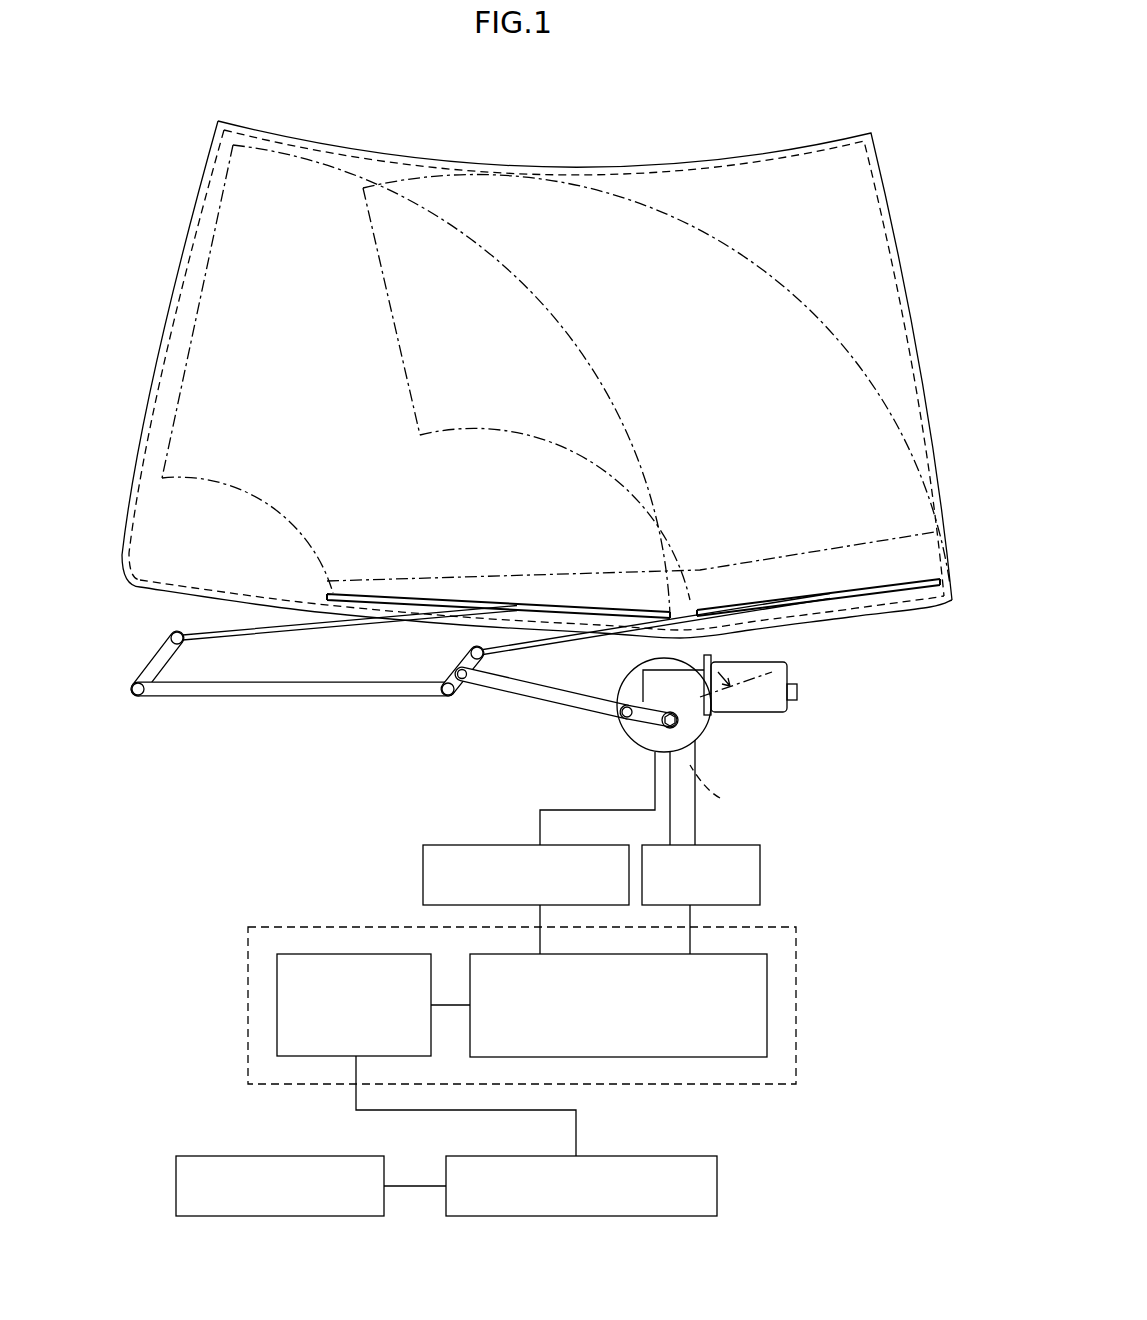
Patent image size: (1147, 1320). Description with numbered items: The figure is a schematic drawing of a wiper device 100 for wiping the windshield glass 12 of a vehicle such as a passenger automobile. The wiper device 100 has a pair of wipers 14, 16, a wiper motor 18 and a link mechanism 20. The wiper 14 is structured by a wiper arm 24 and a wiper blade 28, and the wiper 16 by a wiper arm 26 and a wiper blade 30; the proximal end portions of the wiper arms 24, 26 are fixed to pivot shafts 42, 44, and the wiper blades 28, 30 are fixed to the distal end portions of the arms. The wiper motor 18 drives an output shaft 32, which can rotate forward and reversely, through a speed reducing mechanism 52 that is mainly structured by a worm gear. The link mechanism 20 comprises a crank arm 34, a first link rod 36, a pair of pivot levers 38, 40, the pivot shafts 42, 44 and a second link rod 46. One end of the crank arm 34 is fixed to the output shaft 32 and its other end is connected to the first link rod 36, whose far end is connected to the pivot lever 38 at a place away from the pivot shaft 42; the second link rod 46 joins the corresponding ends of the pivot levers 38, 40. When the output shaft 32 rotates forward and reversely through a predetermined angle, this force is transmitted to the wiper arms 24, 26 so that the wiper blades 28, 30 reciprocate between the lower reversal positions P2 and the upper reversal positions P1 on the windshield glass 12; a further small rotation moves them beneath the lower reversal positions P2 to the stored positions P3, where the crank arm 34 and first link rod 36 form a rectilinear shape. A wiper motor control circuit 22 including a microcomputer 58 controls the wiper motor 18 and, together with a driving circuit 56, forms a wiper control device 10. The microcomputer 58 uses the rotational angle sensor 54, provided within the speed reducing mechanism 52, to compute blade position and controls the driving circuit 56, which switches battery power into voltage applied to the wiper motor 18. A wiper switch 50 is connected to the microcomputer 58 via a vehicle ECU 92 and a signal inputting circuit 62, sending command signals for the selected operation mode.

The wiper control device 10 is at (872, 824).
The windshield glass 12 is at (572, 167).
The wiper 14 is at (708, 560).
The wiper 16 is at (418, 564).
The wiper motor 18 is at (625, 780).
The link mechanism 20 is at (380, 704).
The wiper motor control circuit 22 is at (539, 994).
The wiper arm 24 is at (690, 595).
The wiper arm 26 is at (210, 630).
The wiper blade 28 is at (835, 593).
The wiper blade 30 is at (540, 607).
The output shaft 32 is at (700, 740).
The crank arm 34 is at (633, 733).
The first link rod 36 is at (520, 698).
The pivot lever 38 is at (455, 672).
The pivot lever 40 is at (145, 668).
The pivot shaft 42 is at (470, 648).
The pivot shaft 44 is at (165, 634).
The second link rod 46 is at (258, 698).
The wiper switch 50 is at (176, 1184).
The speed reducing mechanism 52 is at (705, 712).
The rotational angle sensor 54 is at (395, 870).
The driving circuit 56 is at (760, 870).
The microcomputer 58 is at (767, 982).
The signal inputting circuit 62 is at (277, 982).
The vehicle ECU 92 is at (717, 1182).
The wiper device 100 is at (921, 153).
The upper reversal positions P1 is at (210, 300).
The lower reversal positions P2 is at (452, 577).
The stored positions P3 is at (312, 590).